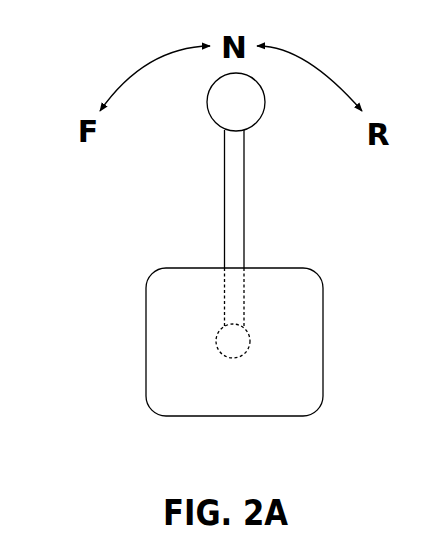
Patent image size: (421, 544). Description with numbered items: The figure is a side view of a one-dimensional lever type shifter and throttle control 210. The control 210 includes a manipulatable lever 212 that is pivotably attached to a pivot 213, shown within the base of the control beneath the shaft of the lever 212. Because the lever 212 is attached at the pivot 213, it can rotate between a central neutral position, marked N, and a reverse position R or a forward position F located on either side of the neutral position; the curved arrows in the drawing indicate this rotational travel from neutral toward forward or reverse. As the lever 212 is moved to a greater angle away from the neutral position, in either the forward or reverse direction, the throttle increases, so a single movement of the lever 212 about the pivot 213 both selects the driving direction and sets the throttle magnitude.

The lever type shifter and throttle control 210 is at (125, 284).
The manipulatable lever 212 is at (223, 220).
The pivot 213 is at (243, 332).